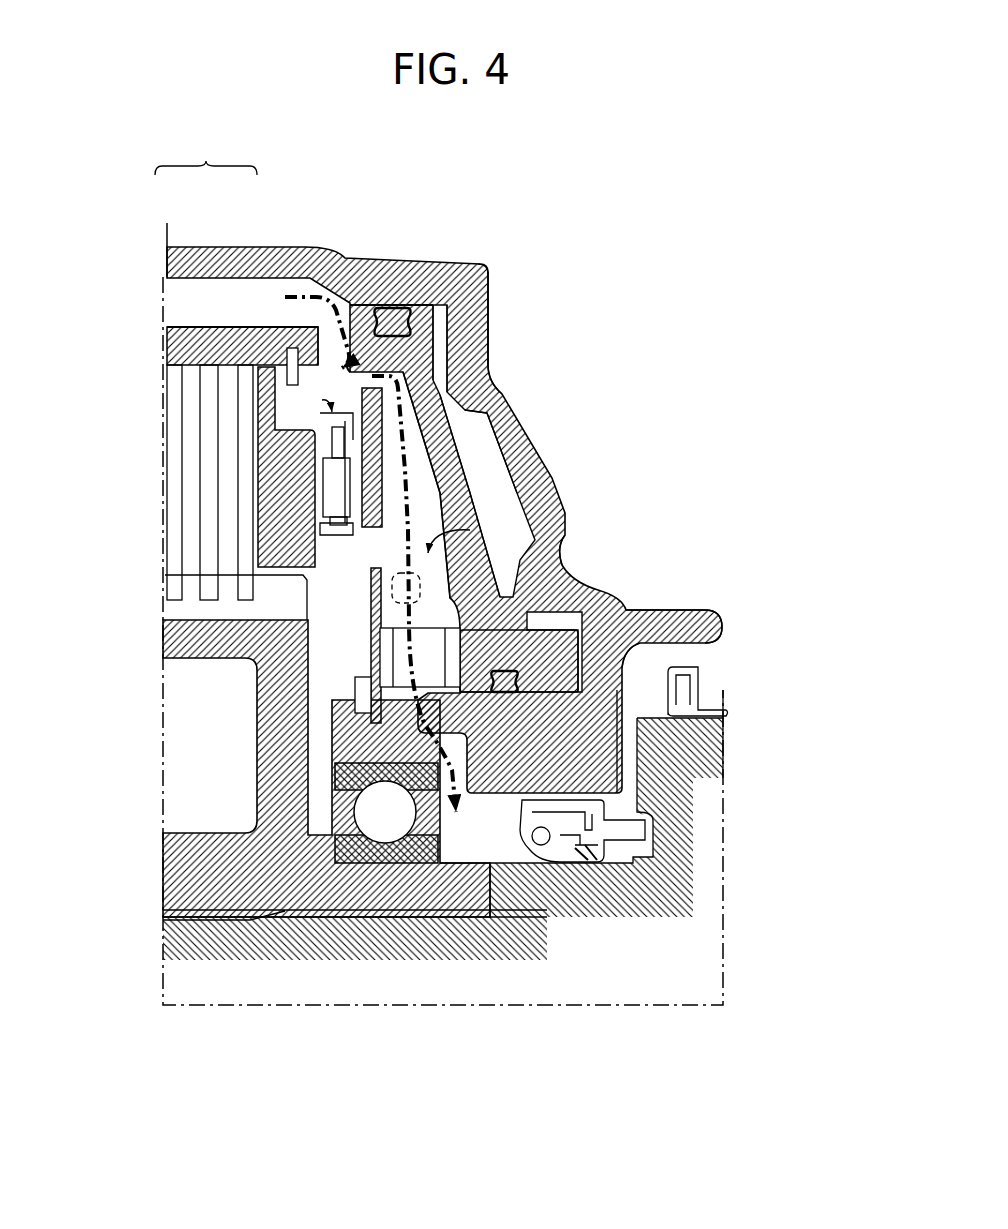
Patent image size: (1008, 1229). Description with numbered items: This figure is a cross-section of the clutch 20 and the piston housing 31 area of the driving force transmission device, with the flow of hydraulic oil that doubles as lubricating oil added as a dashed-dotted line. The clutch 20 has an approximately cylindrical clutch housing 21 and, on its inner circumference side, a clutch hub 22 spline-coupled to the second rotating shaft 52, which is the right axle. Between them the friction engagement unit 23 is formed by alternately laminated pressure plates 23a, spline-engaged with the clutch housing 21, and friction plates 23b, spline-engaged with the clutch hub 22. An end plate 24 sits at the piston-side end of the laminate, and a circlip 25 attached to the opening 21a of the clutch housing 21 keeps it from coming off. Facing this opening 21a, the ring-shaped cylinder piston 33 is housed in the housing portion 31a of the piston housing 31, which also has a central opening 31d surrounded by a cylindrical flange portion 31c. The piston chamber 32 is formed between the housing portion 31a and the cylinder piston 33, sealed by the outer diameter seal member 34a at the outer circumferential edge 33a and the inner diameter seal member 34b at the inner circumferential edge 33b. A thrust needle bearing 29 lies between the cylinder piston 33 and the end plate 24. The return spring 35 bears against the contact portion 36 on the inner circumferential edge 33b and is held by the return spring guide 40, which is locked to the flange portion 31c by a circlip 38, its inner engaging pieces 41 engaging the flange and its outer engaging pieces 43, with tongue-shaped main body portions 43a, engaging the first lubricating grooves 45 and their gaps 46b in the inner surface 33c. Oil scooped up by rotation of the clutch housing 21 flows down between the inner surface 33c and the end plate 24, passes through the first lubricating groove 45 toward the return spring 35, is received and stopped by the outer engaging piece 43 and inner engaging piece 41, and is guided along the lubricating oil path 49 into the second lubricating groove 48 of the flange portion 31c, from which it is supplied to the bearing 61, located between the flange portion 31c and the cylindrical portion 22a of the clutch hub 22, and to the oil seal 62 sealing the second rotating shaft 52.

The clutch 20 is at (256, 325).
The clutch housing 21 is at (236, 327).
The opening 21a is at (353, 302).
The clutch hub 22 is at (212, 662).
The cylindrical portion 22a is at (383, 890).
The friction engagement unit 23 is at (206, 154).
The pressure plate 23a is at (227, 326).
The friction plate 23b is at (190, 372).
The end plate 24 is at (292, 348).
The circlip 25 is at (337, 363).
The thrust needle bearing 29 is at (455, 398).
The piston housing 31 is at (492, 308).
The housing portion 31a is at (447, 338).
The flange portion 31c is at (445, 848).
The opening 31d is at (490, 770).
The piston chamber 32 is at (503, 402).
The cylinder piston 33 is at (527, 430).
The outer circumferential edge 33a is at (488, 268).
The inner circumferential edge 33b is at (478, 665).
The inner surface 33c is at (465, 440).
The outer diameter seal member 34a is at (394, 312).
The inner diameter seal member 34b is at (452, 750).
The return spring 35 is at (560, 616).
The contact portion 36 is at (614, 604).
The circlip 38 is at (355, 688).
The return spring guide 40 is at (369, 612).
The inner engaging piece 41 is at (330, 738).
The outer engaging piece 43 is at (458, 527).
The main body portion 43a is at (372, 590).
The first lubricating groove 45 is at (447, 470).
The gap 46b is at (562, 570).
The second lubricating groove 48 is at (462, 648).
The lubricating oil path 49 is at (460, 552).
The second rotating shaft 52 is at (705, 832).
The bearing 61 is at (455, 866).
The oil seal 62 is at (565, 865).